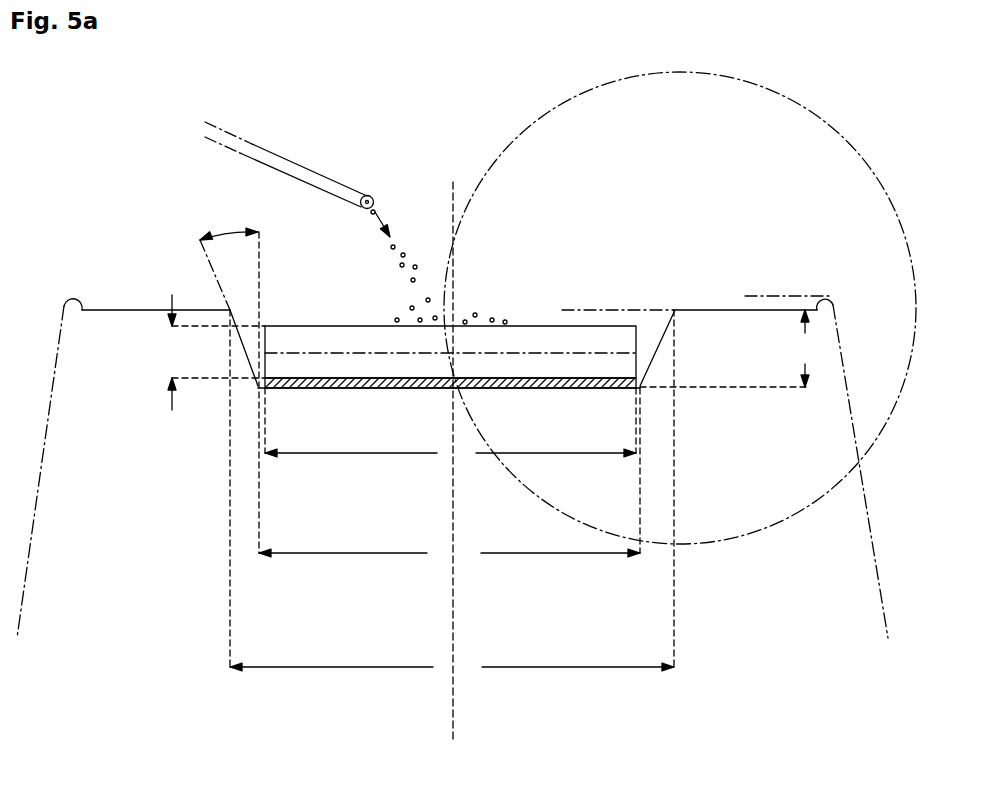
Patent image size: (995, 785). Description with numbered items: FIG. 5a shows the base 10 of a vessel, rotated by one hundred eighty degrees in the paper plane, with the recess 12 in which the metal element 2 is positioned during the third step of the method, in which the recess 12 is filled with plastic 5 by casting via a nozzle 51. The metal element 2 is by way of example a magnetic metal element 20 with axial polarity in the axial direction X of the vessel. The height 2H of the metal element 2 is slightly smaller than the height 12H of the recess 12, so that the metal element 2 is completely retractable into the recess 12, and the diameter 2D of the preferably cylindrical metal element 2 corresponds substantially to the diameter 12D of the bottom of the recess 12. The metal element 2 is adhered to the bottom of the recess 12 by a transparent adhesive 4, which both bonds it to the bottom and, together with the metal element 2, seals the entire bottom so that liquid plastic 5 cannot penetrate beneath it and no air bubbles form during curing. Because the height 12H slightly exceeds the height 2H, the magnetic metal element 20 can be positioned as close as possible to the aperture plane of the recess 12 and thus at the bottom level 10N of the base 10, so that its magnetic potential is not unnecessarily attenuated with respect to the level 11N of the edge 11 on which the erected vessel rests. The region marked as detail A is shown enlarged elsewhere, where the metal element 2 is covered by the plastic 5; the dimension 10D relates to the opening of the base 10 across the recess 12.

The metal element 2 is at (450, 321).
The magnetic metal element 20 is at (350, 350).
The transparent adhesive 4 is at (308, 385).
The plastic 5 is at (388, 210).
The nozzle 51 is at (305, 175).
The base 10 is at (449, 350).
The bottom level of the base 10N is at (562, 310).
The edge 11 is at (75, 302).
The level of the edge 11N is at (745, 296).
The recess 12 is at (647, 347).
The height of the metal element 2H is at (213, 352).
The height of the recess 12H is at (733, 348).
The diameter of the metal element 2D is at (450, 427).
The diameter of the bottom of the recess 12D is at (449, 399).
The holder opening diameter 10D is at (452, 495).
The detail A is at (842, 137).
The axial direction X is at (453, 471).